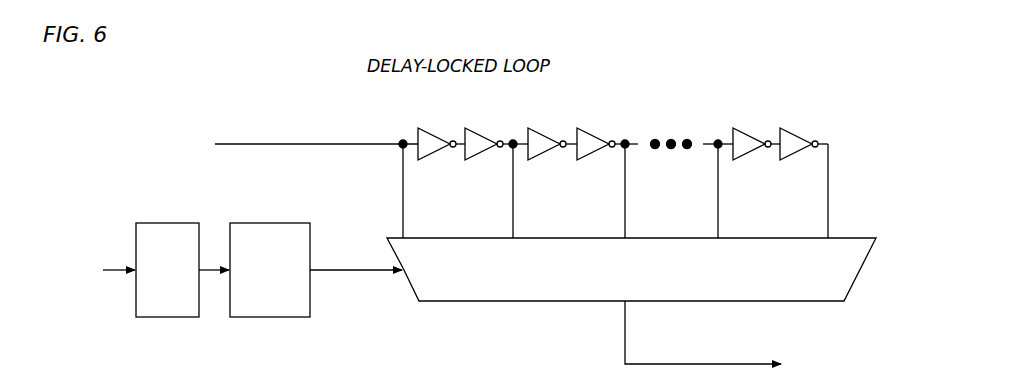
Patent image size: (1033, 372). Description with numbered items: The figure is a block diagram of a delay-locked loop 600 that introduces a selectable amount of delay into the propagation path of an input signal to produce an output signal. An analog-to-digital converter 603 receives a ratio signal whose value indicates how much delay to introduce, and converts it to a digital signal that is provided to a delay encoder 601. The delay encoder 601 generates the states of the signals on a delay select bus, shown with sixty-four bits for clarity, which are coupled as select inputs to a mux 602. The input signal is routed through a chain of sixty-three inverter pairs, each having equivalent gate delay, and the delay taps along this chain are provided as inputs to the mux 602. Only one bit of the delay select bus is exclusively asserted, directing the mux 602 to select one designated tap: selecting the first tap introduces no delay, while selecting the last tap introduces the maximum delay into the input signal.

The delay-locked loop 600 is at (806, 108).
The delay encoder 601 is at (300, 270).
The mux 602 is at (782, 301).
The analog-to-digital (A/D) converter 603 is at (136, 270).